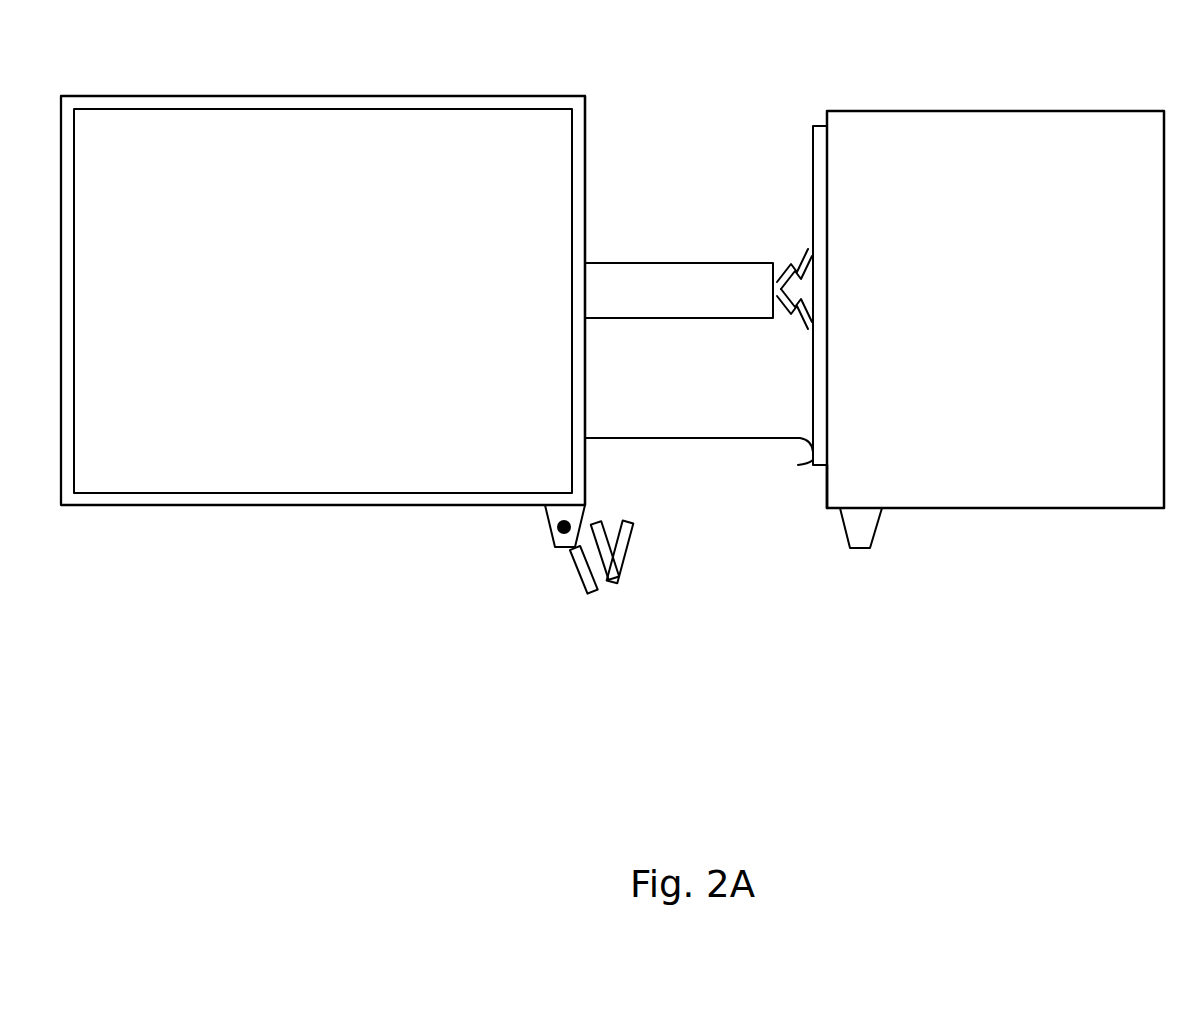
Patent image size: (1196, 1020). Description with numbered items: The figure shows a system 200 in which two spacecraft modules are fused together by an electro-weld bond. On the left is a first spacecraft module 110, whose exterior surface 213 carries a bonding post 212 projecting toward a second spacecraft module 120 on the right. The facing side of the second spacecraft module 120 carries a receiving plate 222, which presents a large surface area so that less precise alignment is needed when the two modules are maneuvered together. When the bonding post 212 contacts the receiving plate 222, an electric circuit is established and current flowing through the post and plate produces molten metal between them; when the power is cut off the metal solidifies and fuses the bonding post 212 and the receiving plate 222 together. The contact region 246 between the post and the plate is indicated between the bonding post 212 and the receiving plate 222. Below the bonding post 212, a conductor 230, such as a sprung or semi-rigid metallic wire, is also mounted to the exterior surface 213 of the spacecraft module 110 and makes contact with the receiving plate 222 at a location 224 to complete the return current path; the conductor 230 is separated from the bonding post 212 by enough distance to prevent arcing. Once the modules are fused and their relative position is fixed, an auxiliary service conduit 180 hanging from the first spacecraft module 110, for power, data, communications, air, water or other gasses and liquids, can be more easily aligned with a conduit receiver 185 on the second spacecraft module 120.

The spacecraft module 110 is at (323, 96).
The exterior surface 213 is at (587, 110).
The bonding post 212 is at (680, 263).
The break lines / connection 246 is at (787, 226).
The receiving plate 222 is at (813, 126).
The spacecraft module 120 is at (995, 111).
The conductor 230 is at (720, 438).
The lower mounting portion 224 is at (818, 480).
The conduit receiver 185 is at (877, 527).
The auxiliary service conduit 180 is at (548, 562).
The system 200 is at (585, 705).